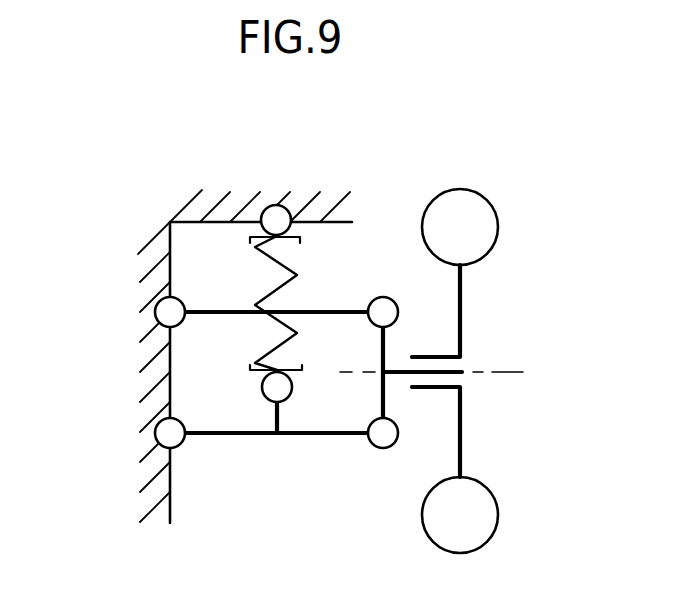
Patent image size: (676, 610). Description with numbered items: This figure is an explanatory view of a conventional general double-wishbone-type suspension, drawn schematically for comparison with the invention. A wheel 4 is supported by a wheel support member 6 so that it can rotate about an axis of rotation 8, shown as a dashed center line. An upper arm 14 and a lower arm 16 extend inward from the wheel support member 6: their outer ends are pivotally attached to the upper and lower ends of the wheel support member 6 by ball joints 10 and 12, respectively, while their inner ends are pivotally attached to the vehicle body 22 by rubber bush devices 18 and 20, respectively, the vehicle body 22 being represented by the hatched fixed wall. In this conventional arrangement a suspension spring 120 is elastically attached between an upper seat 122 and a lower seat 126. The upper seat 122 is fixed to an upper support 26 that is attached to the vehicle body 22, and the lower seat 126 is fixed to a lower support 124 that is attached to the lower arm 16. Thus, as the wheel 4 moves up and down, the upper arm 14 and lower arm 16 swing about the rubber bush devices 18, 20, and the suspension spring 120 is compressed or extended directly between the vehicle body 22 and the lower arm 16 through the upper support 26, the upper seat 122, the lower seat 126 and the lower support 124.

The wheel 4 is at (499, 224).
The wheel support member 6 is at (388, 341).
The axis of rotation 8 is at (490, 372).
The ball joint 10 is at (384, 295).
The ball joint 12 is at (383, 449).
The upper arm 14 is at (205, 312).
The lower arm 16 is at (224, 436).
The rubber bush device 18 is at (158, 312).
The rubber bush device 20 is at (158, 433).
The vehicle body 22 is at (148, 220).
The upper support 26 is at (275, 214).
The suspension spring 120 is at (272, 290).
The upper seat 122 is at (292, 241).
The lower support 124 is at (294, 397).
The lower seat 126 is at (263, 376).